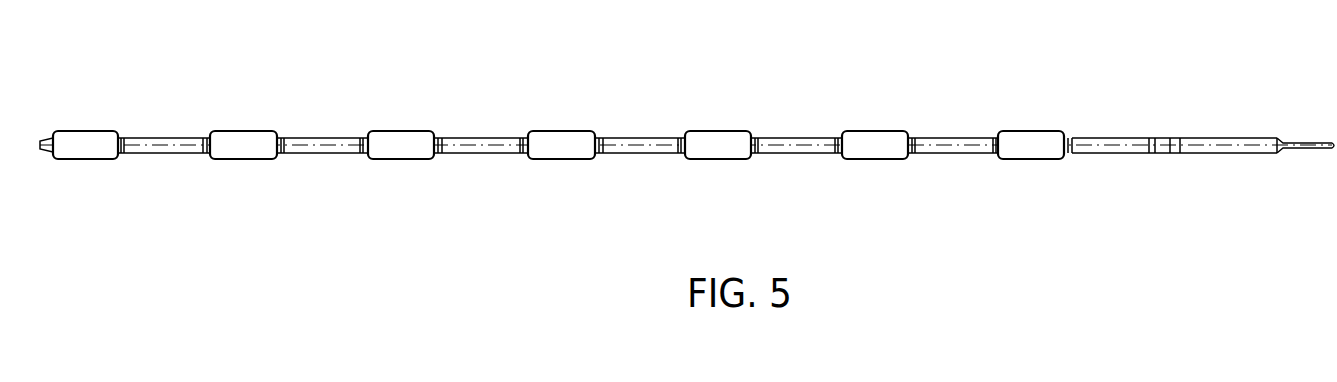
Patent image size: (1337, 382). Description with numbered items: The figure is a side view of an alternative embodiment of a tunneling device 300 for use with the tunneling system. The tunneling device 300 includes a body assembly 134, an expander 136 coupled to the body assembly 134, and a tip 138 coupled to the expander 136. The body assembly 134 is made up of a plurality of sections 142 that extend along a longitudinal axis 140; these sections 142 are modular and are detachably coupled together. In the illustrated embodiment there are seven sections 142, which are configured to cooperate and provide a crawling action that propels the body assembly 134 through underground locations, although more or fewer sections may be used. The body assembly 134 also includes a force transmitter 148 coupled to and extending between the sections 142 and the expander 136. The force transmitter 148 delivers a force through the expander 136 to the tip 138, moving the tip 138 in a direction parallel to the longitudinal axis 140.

The tunneling device 300 is at (200, 64).
The body assembly 134 is at (256, 168).
The expander 136 is at (1211, 159).
The tip 138 is at (1318, 158).
The longitudinal axis 140 is at (2, 144).
The sections 142 is at (642, 155).
The force transmitter 148 is at (1156, 108).